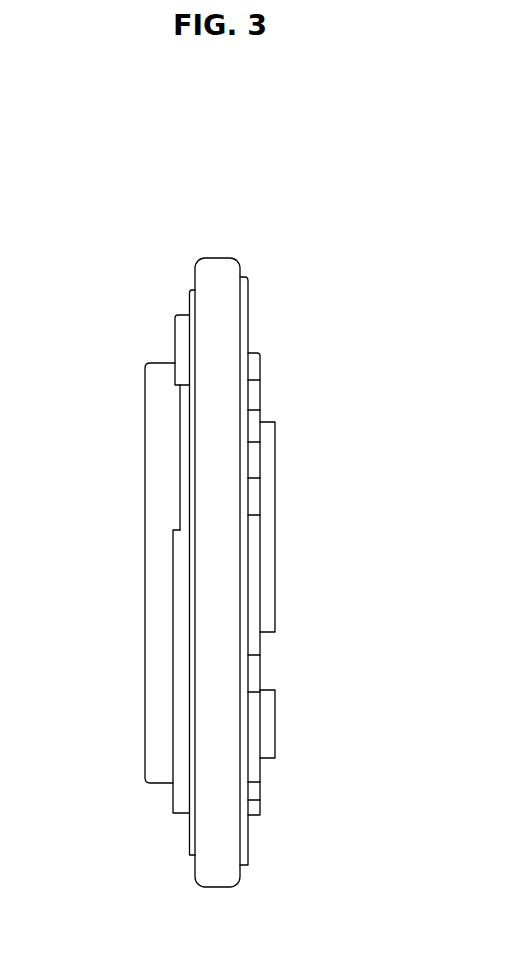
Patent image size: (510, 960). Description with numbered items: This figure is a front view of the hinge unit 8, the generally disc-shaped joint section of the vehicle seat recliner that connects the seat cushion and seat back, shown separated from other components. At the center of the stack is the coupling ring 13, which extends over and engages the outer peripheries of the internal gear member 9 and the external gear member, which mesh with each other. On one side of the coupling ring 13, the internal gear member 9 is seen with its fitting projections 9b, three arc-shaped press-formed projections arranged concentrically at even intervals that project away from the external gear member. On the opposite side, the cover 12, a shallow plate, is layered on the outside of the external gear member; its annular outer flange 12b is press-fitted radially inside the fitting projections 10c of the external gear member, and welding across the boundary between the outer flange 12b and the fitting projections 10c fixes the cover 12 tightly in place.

The hinge unit 8 is at (258, 290).
The internal gear member 9 is at (261, 375).
The fitting projection 9b is at (276, 468).
The fitting projection 10c is at (175, 343).
The cover 12 is at (150, 444).
The outer flange 12b is at (180, 490).
The coupling ring 13 is at (217, 277).